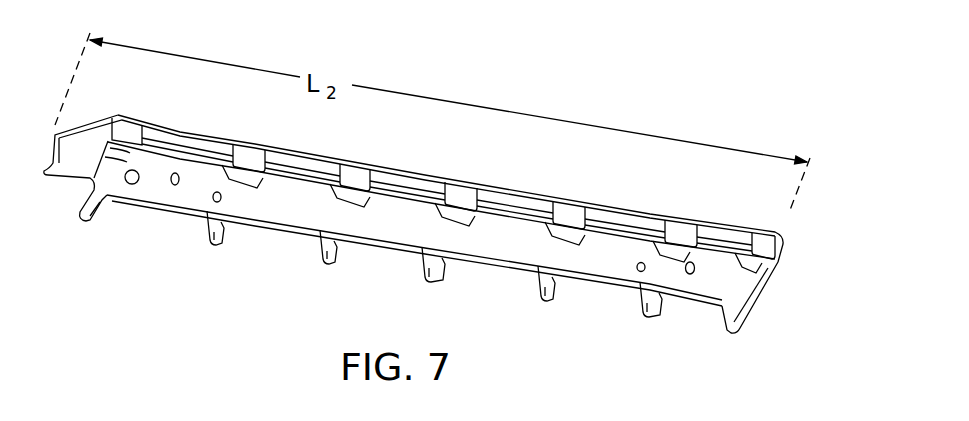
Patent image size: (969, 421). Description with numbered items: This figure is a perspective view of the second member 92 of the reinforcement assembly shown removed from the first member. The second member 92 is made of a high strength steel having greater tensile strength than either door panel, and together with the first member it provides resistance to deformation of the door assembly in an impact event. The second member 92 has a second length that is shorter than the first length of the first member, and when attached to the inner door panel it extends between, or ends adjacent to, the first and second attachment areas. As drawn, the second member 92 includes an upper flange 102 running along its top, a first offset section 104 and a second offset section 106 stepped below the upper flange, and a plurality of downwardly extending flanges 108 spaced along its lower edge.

The second member 92 is at (413, 175).
The upper flange 102 is at (628, 220).
The first offset section 104 is at (717, 257).
The second offset section 106 is at (725, 276).
The downwardly extending flanges 108 is at (322, 250).